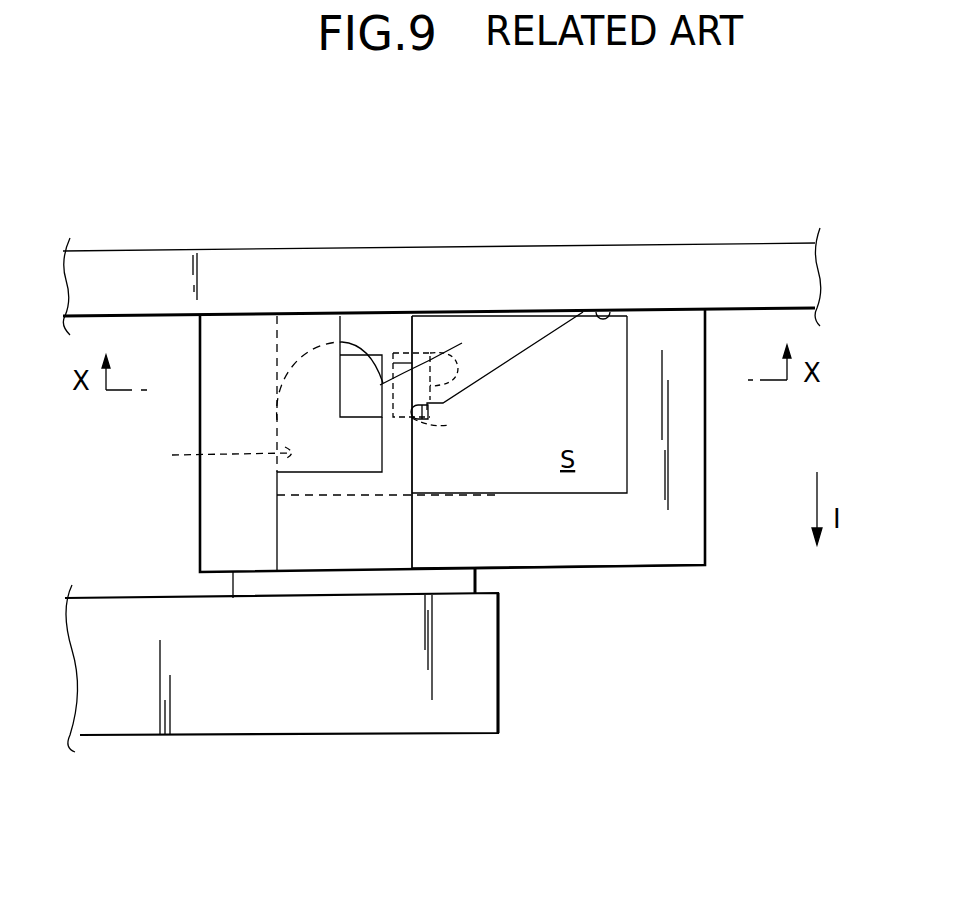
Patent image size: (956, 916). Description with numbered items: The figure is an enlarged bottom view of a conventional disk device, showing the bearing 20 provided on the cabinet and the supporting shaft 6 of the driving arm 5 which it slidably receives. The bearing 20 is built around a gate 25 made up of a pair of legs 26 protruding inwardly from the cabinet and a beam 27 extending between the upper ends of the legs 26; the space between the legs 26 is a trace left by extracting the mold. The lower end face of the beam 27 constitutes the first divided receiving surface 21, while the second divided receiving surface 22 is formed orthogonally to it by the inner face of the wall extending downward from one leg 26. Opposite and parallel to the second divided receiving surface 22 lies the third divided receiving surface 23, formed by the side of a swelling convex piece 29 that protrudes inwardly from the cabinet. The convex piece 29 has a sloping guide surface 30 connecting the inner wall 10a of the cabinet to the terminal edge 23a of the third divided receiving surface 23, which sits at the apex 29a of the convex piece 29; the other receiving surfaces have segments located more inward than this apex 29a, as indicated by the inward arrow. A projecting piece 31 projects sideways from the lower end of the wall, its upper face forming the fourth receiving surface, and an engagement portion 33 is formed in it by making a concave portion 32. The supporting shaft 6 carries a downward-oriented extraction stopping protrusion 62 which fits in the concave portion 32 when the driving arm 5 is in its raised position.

The driving arm 5 is at (312, 735).
The supporting shaft 6 is at (412, 460).
The inner wall 10a is at (606, 312).
The bearing 20 is at (180, 518).
The first divided receiving surface 21 is at (628, 548).
The second divided receiving surface 22 is at (200, 455).
The third divided receiving surface 23 is at (410, 330).
The terminal edge 23a is at (420, 418).
The gate 25 is at (705, 530).
The leg 26 is at (200, 383).
The beam 27 is at (555, 568).
The convex piece 29 is at (510, 320).
The apex 29a is at (430, 412).
The sloping guide surface 30 is at (535, 343).
The projecting piece 31 is at (290, 330).
The concave portion 32 is at (345, 370).
The engagement portion 33 is at (380, 450).
The extraction stopping protrusion 62 is at (455, 345).